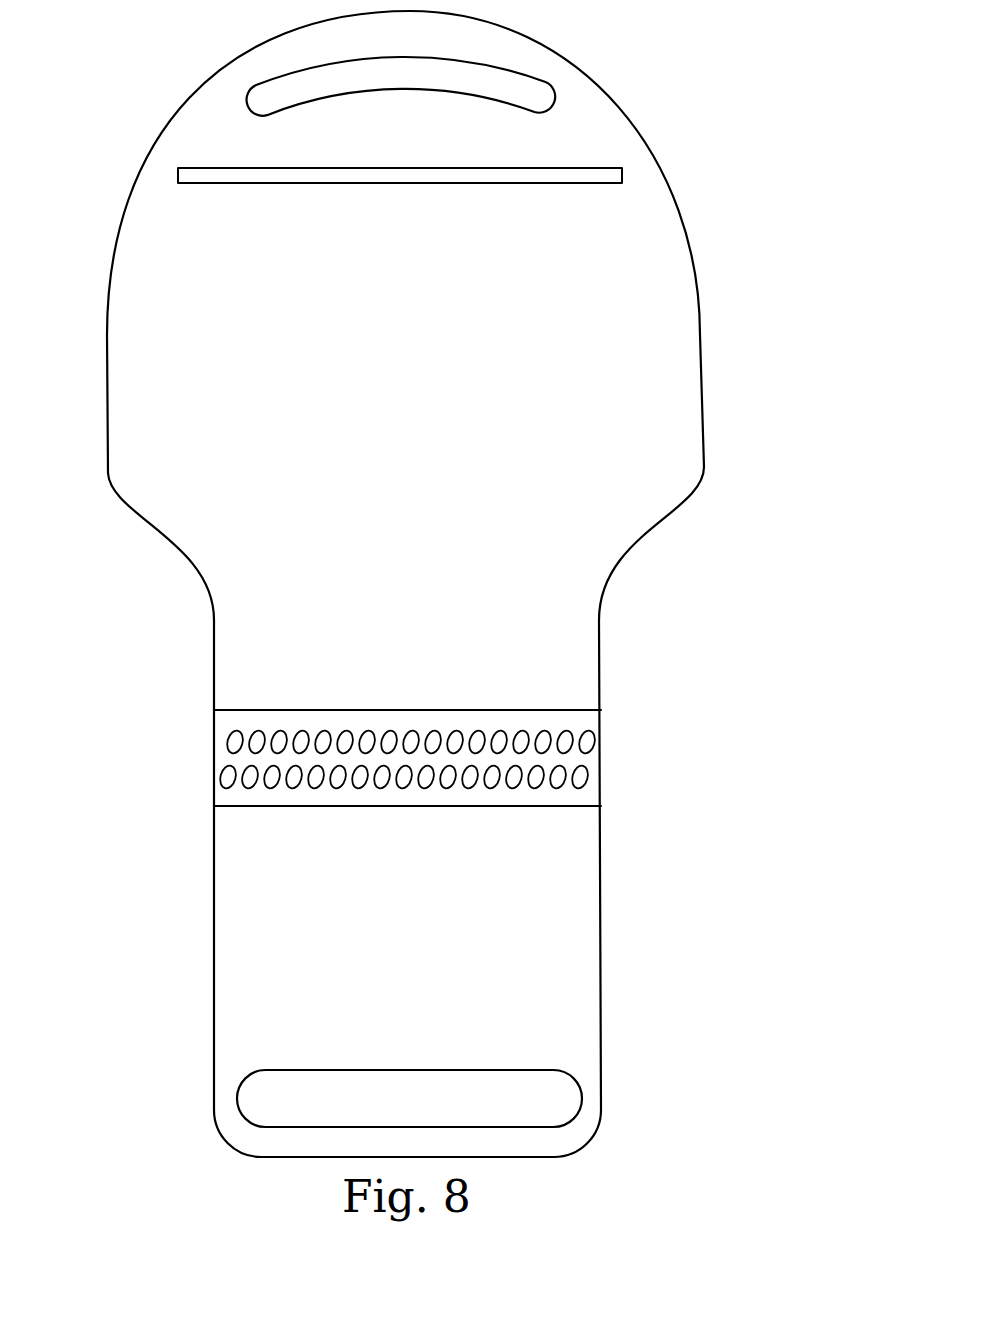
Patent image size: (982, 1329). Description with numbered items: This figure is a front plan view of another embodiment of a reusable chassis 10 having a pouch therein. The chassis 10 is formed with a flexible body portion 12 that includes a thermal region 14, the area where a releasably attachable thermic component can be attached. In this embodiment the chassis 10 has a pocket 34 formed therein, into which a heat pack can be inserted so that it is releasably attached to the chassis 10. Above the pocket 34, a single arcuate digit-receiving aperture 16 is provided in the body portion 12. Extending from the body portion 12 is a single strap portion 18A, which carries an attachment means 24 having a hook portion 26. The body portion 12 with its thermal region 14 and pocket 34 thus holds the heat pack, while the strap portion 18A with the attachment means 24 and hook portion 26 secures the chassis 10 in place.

The reusable chassis 10 is at (431, 578).
The flexible body portion 12 is at (369, 242).
The thermal region 14 is at (137, 278).
The arcuate digit-receiving aperture 16 is at (500, 83).
The pocket 34 is at (578, 173).
The strap portion 18A is at (543, 973).
The attachment means 24 is at (392, 1112).
The hook portion 26 is at (268, 1102).